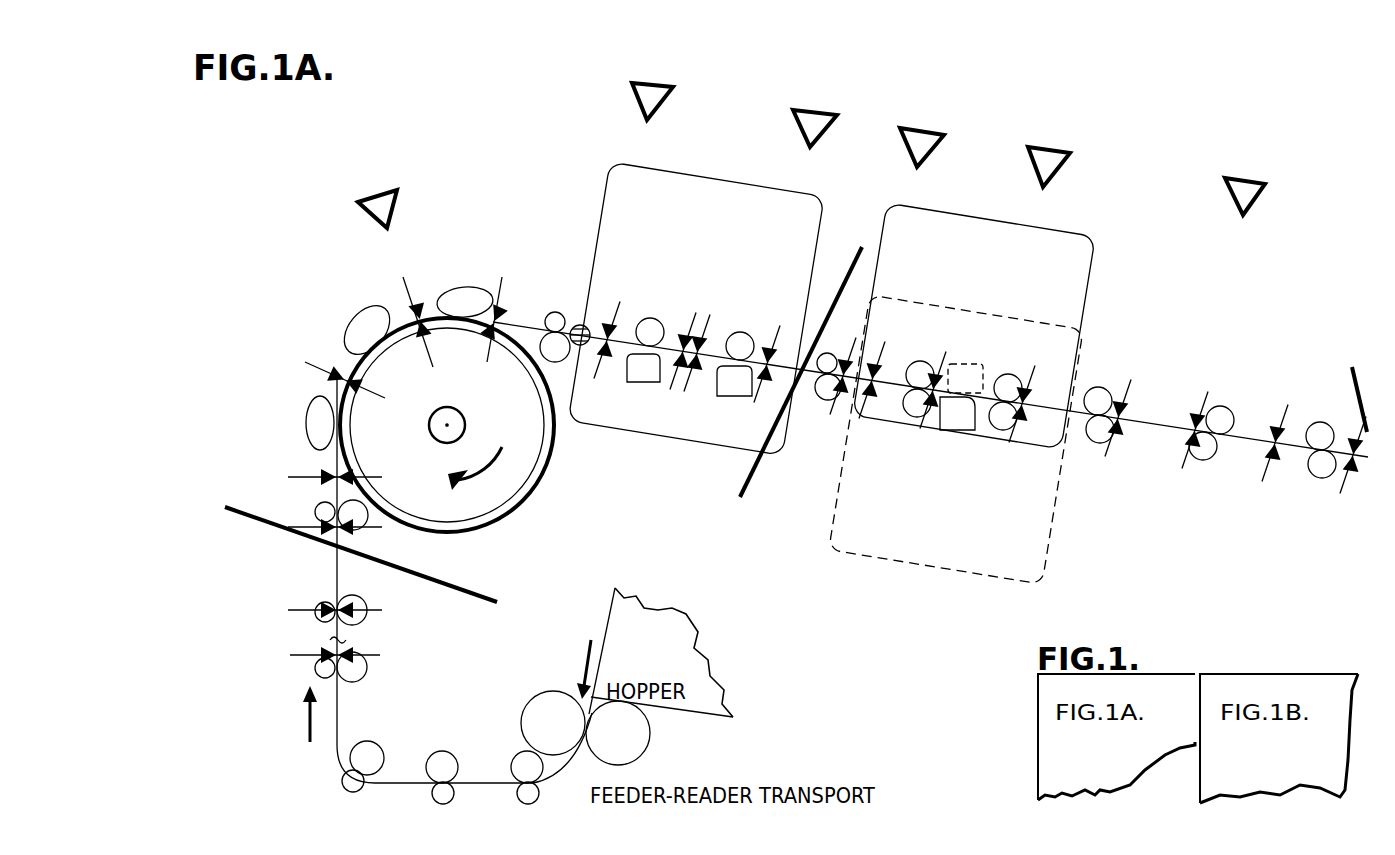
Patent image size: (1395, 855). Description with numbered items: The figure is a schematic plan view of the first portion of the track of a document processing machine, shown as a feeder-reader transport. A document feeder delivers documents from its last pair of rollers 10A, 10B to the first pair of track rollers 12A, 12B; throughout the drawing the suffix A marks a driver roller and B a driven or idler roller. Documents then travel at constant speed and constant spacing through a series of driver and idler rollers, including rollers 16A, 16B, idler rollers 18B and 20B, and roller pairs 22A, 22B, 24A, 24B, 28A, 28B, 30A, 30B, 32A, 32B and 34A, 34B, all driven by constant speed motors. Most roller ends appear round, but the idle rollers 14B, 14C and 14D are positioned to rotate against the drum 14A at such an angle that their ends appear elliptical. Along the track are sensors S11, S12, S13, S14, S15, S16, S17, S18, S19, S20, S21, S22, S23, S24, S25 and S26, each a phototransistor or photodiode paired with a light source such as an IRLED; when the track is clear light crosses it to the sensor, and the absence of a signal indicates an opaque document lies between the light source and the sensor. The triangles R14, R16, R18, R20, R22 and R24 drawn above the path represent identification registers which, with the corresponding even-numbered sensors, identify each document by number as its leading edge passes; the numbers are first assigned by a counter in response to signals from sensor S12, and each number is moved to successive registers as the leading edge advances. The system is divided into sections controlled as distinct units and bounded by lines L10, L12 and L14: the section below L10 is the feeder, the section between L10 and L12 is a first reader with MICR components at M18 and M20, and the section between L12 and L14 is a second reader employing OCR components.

The driver roller 10A is at (366, 606).
The idler roller 10B is at (316, 608).
The driver roller 12A is at (368, 512).
The idler roller 12B is at (316, 506).
The drum 14A is at (530, 492).
The idle roller 14B is at (306, 422).
The idle roller 14C is at (356, 312).
The idle roller 14D is at (466, 287).
The driver roller 16A is at (548, 365).
The idler roller 16B is at (557, 311).
The idler roller 18B is at (650, 318).
The idler roller 20B is at (740, 332).
The driver roller 22A is at (820, 400).
The idler roller 22B is at (830, 353).
The driver roller 24A is at (915, 418).
The idler roller 24B is at (915, 361).
The driver roller 28A is at (1003, 431).
The idler roller 28B is at (1003, 374).
The driver roller 30A is at (1100, 444).
The idler roller 30B is at (1088, 390).
The driver roller 32A is at (1205, 461).
The idler roller 32B is at (1222, 406).
The driver roller 34A is at (1322, 479).
The idler roller 34B is at (1318, 422).
The sensor S11 is at (372, 545).
The sensor S12 is at (350, 475).
The sensor S13 is at (352, 392).
The sensor S14 is at (426, 340).
The sensor S15 is at (492, 340).
The sensor S16 is at (598, 362).
The sensor S17 is at (700, 385).
The sensor S18 is at (762, 392).
The sensor S19 is at (842, 418).
The sensor S20 is at (871, 422).
The sensor S21 is at (934, 432).
The sensor S22 is at (1019, 442).
The sensor S23 is at (1114, 456).
The sensor S24 is at (1190, 468).
The sensor S25 is at (1270, 480).
The sensor S26 is at (1348, 494).
The ID register R14 is at (376, 195).
The ID register R16 is at (652, 83).
The ID register R18 is at (812, 110).
The ID register R20 is at (922, 128).
The ID register R22 is at (1048, 147).
The ID register R24 is at (1245, 178).
The section boundary line L10 is at (497, 600).
The section boundary line L12 is at (742, 500).
The section boundary line L14 is at (1352, 365).
The MICR component M18 is at (630, 384).
The MICR component M20 is at (735, 398).
The MICR reader MICR is at (679, 378).
The OCR reader OCR is at (957, 431).